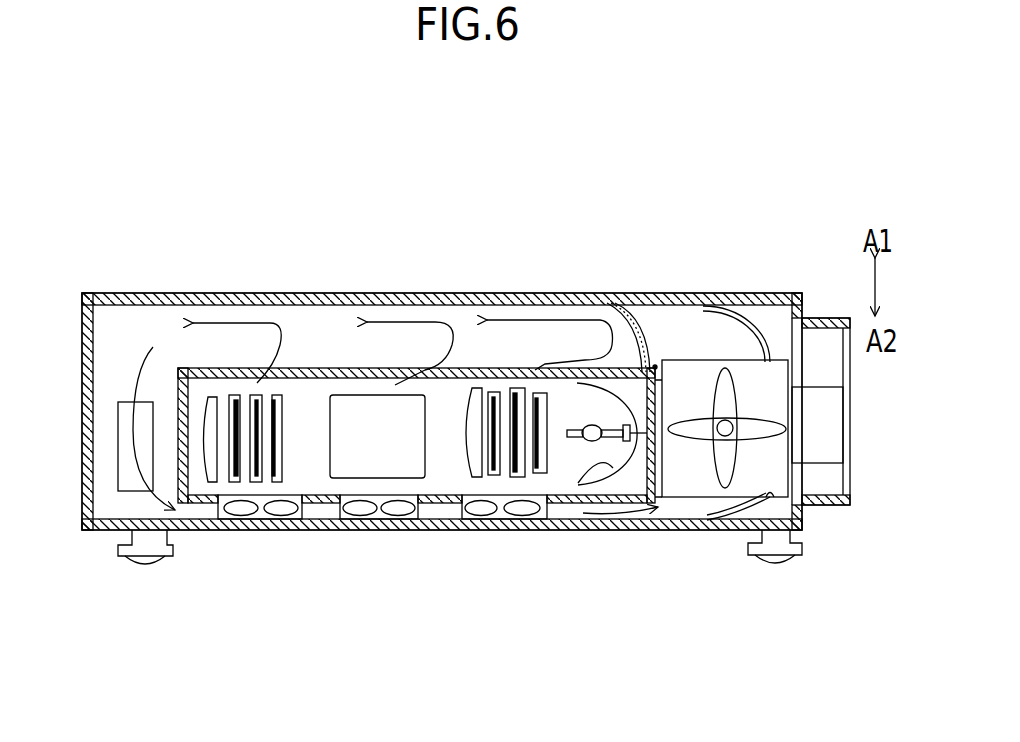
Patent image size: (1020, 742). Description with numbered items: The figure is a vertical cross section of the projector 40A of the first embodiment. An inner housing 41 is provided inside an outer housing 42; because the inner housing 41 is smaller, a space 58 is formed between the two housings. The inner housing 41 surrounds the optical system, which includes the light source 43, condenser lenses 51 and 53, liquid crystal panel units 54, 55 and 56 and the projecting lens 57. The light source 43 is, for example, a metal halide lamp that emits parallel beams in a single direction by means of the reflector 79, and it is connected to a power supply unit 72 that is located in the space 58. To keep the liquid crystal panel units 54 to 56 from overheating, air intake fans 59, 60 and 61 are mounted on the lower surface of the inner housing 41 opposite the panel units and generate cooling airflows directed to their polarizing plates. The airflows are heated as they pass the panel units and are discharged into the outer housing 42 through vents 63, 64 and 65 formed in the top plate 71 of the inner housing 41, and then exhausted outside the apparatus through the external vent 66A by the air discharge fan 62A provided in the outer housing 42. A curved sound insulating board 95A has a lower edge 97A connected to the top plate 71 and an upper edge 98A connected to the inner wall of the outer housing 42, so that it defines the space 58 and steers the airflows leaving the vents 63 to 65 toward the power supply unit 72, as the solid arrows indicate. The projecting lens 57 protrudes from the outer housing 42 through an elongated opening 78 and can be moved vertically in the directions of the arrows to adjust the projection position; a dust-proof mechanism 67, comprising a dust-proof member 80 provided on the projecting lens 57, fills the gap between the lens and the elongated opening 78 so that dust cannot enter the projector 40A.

The projector 40A is at (580, 120).
The inner housing 41 is at (567, 505).
The outer housing 42 is at (575, 533).
The light source 43 is at (583, 448).
The condenser lens 51 is at (205, 473).
The condenser lens 53 is at (485, 480).
The liquid crystal panel unit 54 is at (287, 408).
The liquid crystal panel unit 55 is at (410, 417).
The liquid crystal panel unit 56 is at (550, 393).
The projecting lens 57 is at (833, 442).
The space 58 is at (135, 338).
The air intake fan 59 is at (282, 518).
The air intake fan 60 is at (370, 518).
The air intake fan 61 is at (462, 520).
The air discharge fan 62A is at (702, 453).
The vent 63 is at (225, 368).
The vent 64 is at (380, 368).
The vent 65 is at (488, 390).
The external vent 66A is at (768, 494).
The dust-proof mechanism 67 is at (813, 477).
The top plate 71 is at (622, 368).
The power supply unit 72 is at (125, 477).
The elongated opening 78 is at (812, 345).
The reflector 79 is at (613, 468).
The dust-proof member 80 is at (748, 306).
The sound insulating board 95A is at (643, 323).
The lower edge 97A is at (655, 366).
The upper edge 98A is at (622, 307).